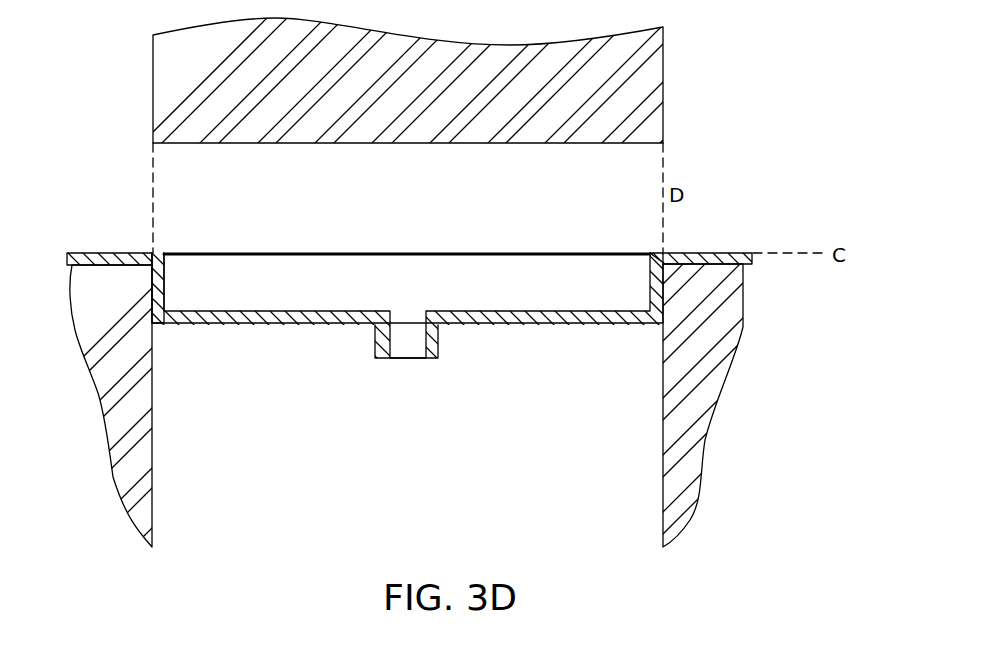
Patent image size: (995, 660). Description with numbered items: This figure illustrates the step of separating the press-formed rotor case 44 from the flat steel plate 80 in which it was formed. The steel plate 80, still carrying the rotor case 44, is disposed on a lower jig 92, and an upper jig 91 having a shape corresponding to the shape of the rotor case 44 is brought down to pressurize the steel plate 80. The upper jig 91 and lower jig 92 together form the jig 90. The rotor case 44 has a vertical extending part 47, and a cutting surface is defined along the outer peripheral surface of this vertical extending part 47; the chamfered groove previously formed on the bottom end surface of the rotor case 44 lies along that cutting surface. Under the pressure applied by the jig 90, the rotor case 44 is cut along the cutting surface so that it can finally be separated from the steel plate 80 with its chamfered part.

The rotor case 44 is at (312, 327).
The vertical extending part 47 is at (154, 285).
The steel plate 80 is at (97, 252).
The jig 90 is at (448, 140).
The upper jig 91 is at (653, 69).
The lower jig 92 is at (415, 225).